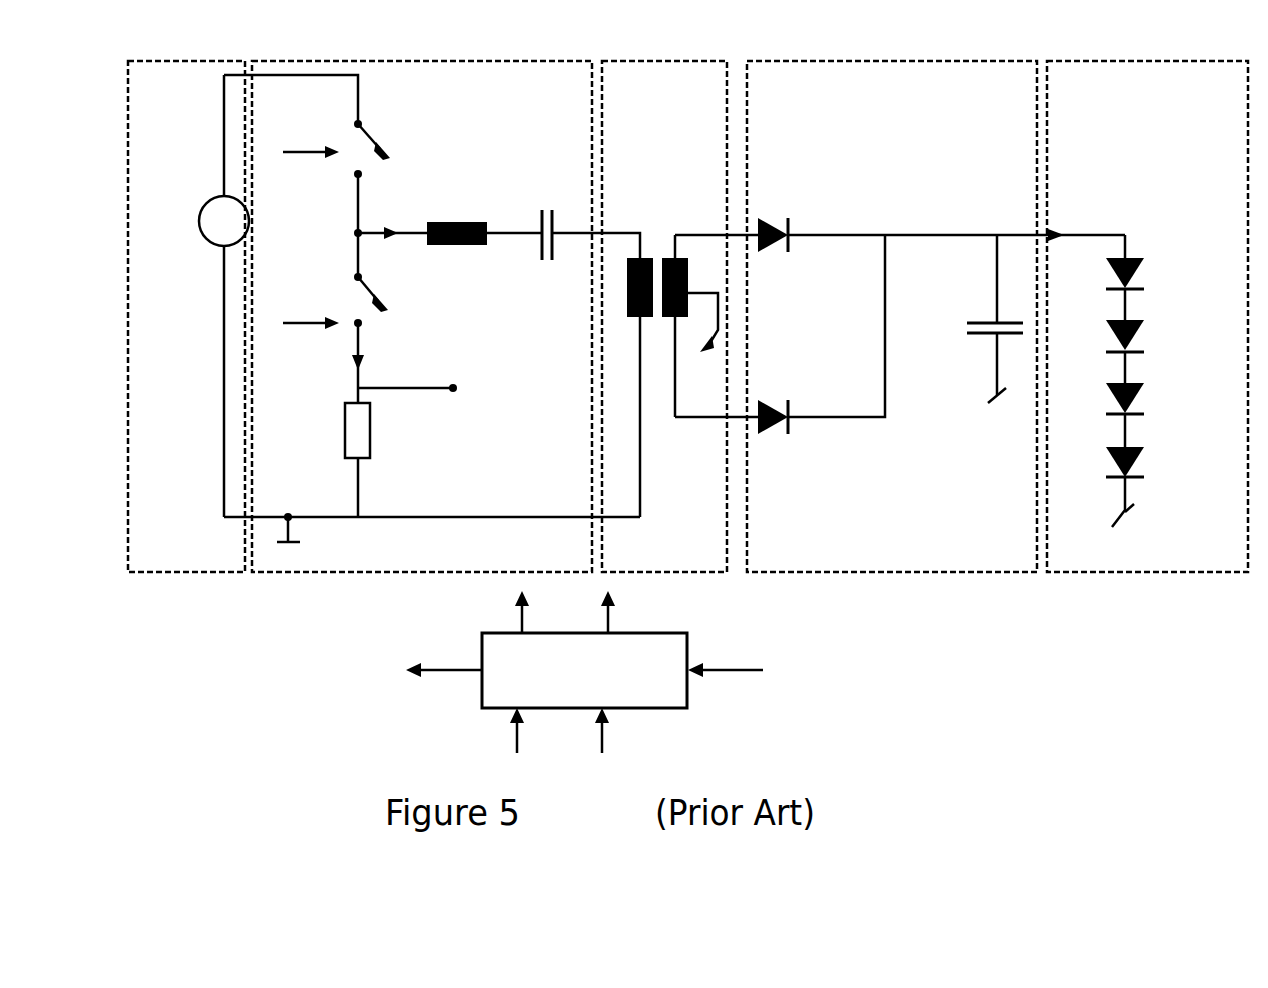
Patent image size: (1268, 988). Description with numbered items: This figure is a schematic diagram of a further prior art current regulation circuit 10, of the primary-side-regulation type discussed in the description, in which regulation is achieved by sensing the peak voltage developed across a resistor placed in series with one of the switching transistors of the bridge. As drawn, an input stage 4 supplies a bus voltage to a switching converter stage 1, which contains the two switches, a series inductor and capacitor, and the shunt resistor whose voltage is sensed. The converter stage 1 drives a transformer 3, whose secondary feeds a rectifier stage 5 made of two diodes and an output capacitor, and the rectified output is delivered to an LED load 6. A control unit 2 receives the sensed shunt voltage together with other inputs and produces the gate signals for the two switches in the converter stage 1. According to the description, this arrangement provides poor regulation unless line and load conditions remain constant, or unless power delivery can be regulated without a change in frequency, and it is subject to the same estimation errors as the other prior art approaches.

The input voltage source (Vbus) 4 is at (195, 61).
The switched-mode converter stage 1 is at (523, 61).
The transformer 3 is at (672, 61).
The rectifier and output capacitor 5 is at (852, 61).
The LED load 6 is at (1078, 61).
The control unit 2 is at (650, 633).
The LED driver circuit (prior art) 10 is at (688, 379).